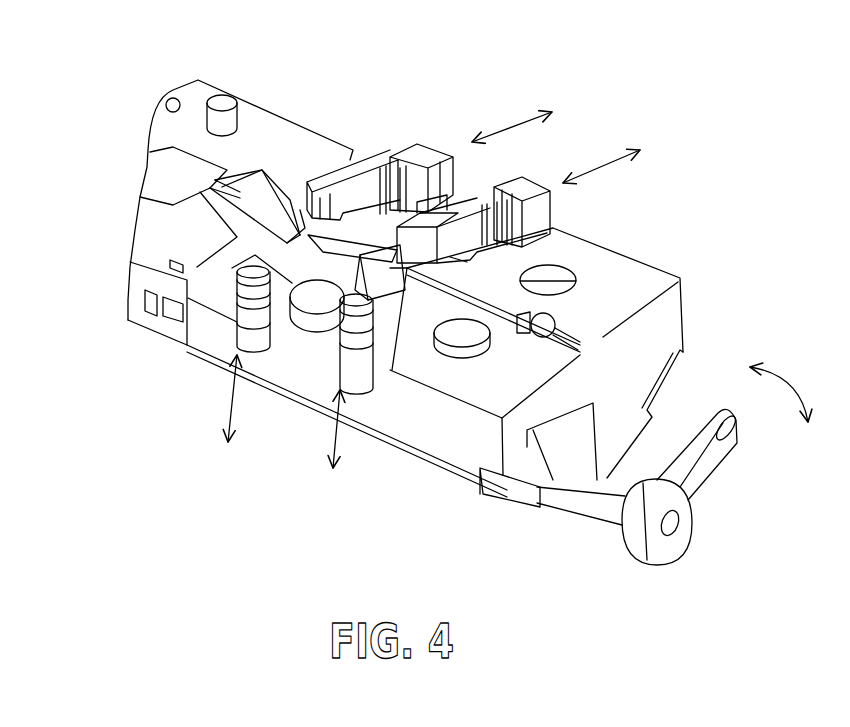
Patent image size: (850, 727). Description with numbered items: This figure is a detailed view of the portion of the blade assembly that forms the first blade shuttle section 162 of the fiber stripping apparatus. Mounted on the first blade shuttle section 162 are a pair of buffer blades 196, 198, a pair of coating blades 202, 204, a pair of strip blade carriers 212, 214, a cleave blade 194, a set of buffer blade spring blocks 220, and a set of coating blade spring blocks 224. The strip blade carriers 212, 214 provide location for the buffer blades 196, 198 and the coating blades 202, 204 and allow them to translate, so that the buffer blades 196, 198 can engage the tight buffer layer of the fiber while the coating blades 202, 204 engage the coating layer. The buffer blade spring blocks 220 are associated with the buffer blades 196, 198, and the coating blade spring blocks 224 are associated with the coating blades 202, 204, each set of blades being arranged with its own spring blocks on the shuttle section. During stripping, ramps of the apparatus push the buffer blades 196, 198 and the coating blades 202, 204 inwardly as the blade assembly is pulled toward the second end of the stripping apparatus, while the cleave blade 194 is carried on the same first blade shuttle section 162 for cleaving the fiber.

The first blade shuttle section 162 is at (193, 373).
The cleave blade 194 is at (738, 497).
The buffer blade 196 is at (357, 167).
The buffer blade 198 is at (277, 243).
The coating blade 202 is at (470, 213).
The coating blade 204 is at (377, 287).
The strip blade carrier 212 is at (652, 285).
The strip blade carrier 214 is at (462, 448).
The buffer blade spring block 220 is at (425, 148).
The coating blade spring block 224 is at (540, 216).